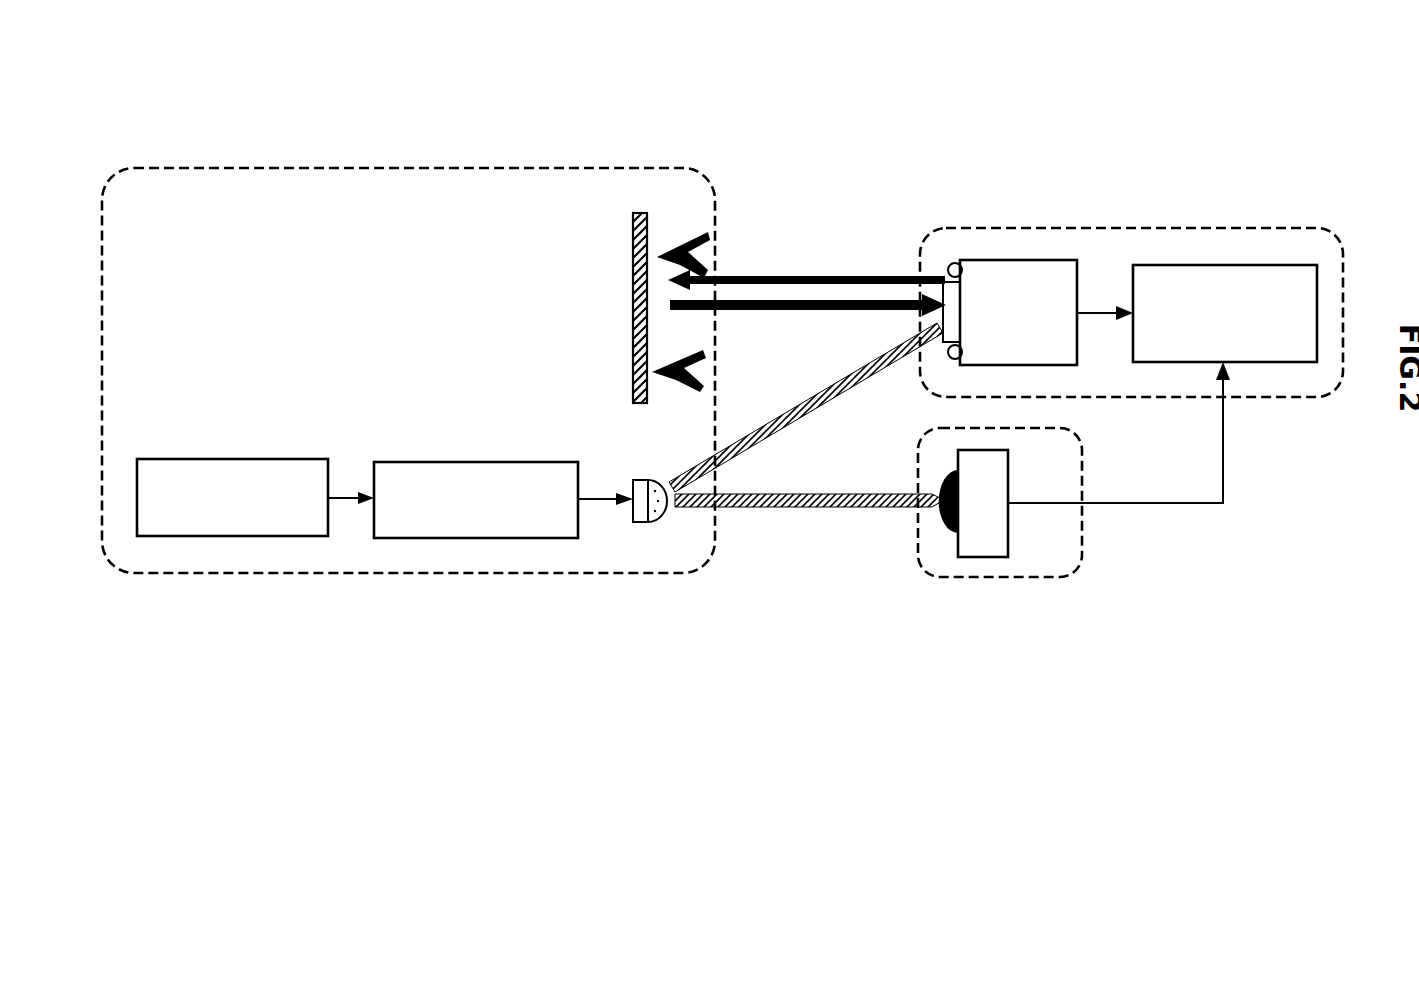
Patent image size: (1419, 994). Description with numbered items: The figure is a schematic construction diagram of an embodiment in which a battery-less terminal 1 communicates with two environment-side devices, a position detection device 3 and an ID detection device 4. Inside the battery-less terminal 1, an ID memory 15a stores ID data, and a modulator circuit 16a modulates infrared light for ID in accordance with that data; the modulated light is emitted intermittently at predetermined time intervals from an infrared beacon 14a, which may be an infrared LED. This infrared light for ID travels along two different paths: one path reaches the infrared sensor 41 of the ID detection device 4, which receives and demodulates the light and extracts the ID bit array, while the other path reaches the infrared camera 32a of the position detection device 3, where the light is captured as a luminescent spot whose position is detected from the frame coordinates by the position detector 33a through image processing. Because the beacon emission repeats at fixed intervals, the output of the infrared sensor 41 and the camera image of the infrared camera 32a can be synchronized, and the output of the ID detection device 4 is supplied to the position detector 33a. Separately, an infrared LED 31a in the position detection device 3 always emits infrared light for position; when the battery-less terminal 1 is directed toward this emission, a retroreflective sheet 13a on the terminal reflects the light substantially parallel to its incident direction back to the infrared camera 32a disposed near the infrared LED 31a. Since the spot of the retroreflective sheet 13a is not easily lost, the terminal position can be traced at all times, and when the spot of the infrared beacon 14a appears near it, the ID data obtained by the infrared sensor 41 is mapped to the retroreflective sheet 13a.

The battery-less terminal 1 is at (205, 168).
The retroreflective sheet 13a is at (636, 213).
The infrared beacon 14a is at (650, 522).
The ID memory 15a is at (232, 497).
The modulator circuit 16a is at (476, 500).
The position detection device 3 is at (1120, 228).
The infrared LED 31a is at (955, 263).
The infrared camera 32a is at (943, 283).
The position detector 33a is at (1225, 313).
The ID detection device 4 is at (1030, 577).
The infrared sensor 41 is at (972, 557).